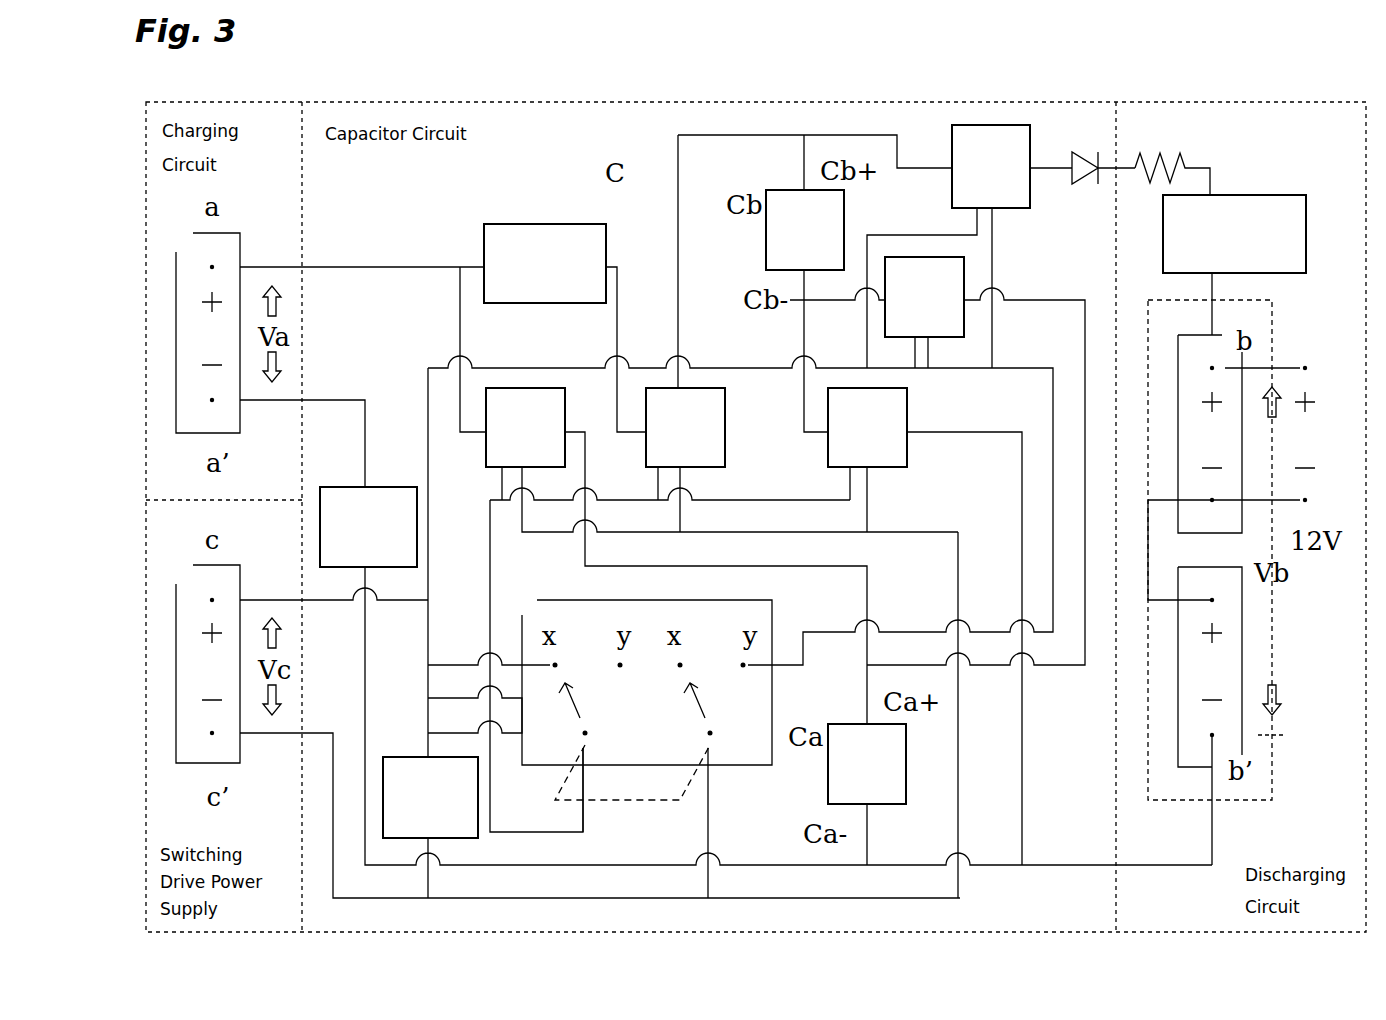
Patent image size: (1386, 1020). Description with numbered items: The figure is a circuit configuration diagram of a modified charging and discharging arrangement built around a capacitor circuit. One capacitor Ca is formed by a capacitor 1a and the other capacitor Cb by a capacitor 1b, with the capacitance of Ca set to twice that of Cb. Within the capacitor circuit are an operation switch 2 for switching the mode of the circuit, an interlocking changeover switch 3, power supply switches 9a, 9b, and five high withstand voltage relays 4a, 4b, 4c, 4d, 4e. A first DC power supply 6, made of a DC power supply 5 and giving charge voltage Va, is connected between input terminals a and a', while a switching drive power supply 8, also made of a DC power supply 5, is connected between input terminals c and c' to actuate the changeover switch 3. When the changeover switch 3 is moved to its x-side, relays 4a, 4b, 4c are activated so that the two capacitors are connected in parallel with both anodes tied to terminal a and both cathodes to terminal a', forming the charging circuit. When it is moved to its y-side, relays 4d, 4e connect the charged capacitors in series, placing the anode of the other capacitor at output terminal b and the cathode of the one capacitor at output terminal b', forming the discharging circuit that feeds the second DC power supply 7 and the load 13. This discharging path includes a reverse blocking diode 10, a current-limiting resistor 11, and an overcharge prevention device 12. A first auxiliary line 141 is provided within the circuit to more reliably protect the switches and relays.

The capacitor 1a is at (867, 764).
The capacitor 1b is at (805, 230).
The operation switch 2 is at (545, 263).
The interlocking changeover switch 3 is at (642, 744).
The relay 4a is at (525, 427).
The relay 4b is at (685, 427).
The relay 4c is at (867, 427).
The relay 4d is at (924, 297).
The relay 4e is at (991, 166).
The DC power supply 5 is at (712, 496).
The first DC power supply 6 is at (203, 327).
The second DC power supply 7 is at (1220, 576).
The switching drive power supply 8 is at (203, 658).
The power supply switch 9a is at (368, 527).
The power supply switch 9b is at (430, 797).
The reverse blocking diode 10 is at (1082, 151).
The resistor 11 is at (1174, 156).
The overcharge prevention device 12 is at (1234, 234).
The load 13 is at (1297, 414).
The first auxiliary line 141 is at (960, 815).